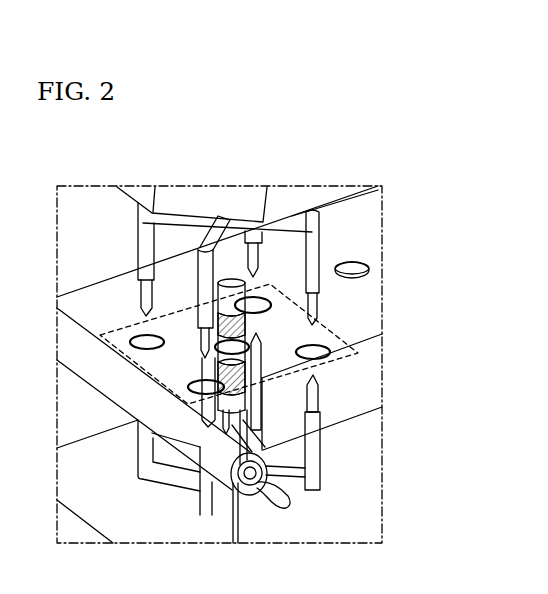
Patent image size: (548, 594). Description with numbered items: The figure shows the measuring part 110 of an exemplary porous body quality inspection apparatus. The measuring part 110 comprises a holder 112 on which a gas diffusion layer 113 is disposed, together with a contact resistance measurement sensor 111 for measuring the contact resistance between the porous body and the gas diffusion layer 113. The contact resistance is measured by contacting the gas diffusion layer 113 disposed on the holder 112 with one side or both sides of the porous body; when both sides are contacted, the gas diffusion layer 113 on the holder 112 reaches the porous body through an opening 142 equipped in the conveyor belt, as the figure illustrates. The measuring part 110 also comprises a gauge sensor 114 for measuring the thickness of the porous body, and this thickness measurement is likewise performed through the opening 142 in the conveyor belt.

The measuring part 110 is at (87, 203).
The contact resistance measurement sensor 111 is at (288, 320).
The holder 112 is at (246, 320).
The gas diffusion layer 113 is at (255, 343).
The gauge sensor 114 is at (151, 292).
The opening 142 is at (160, 340).